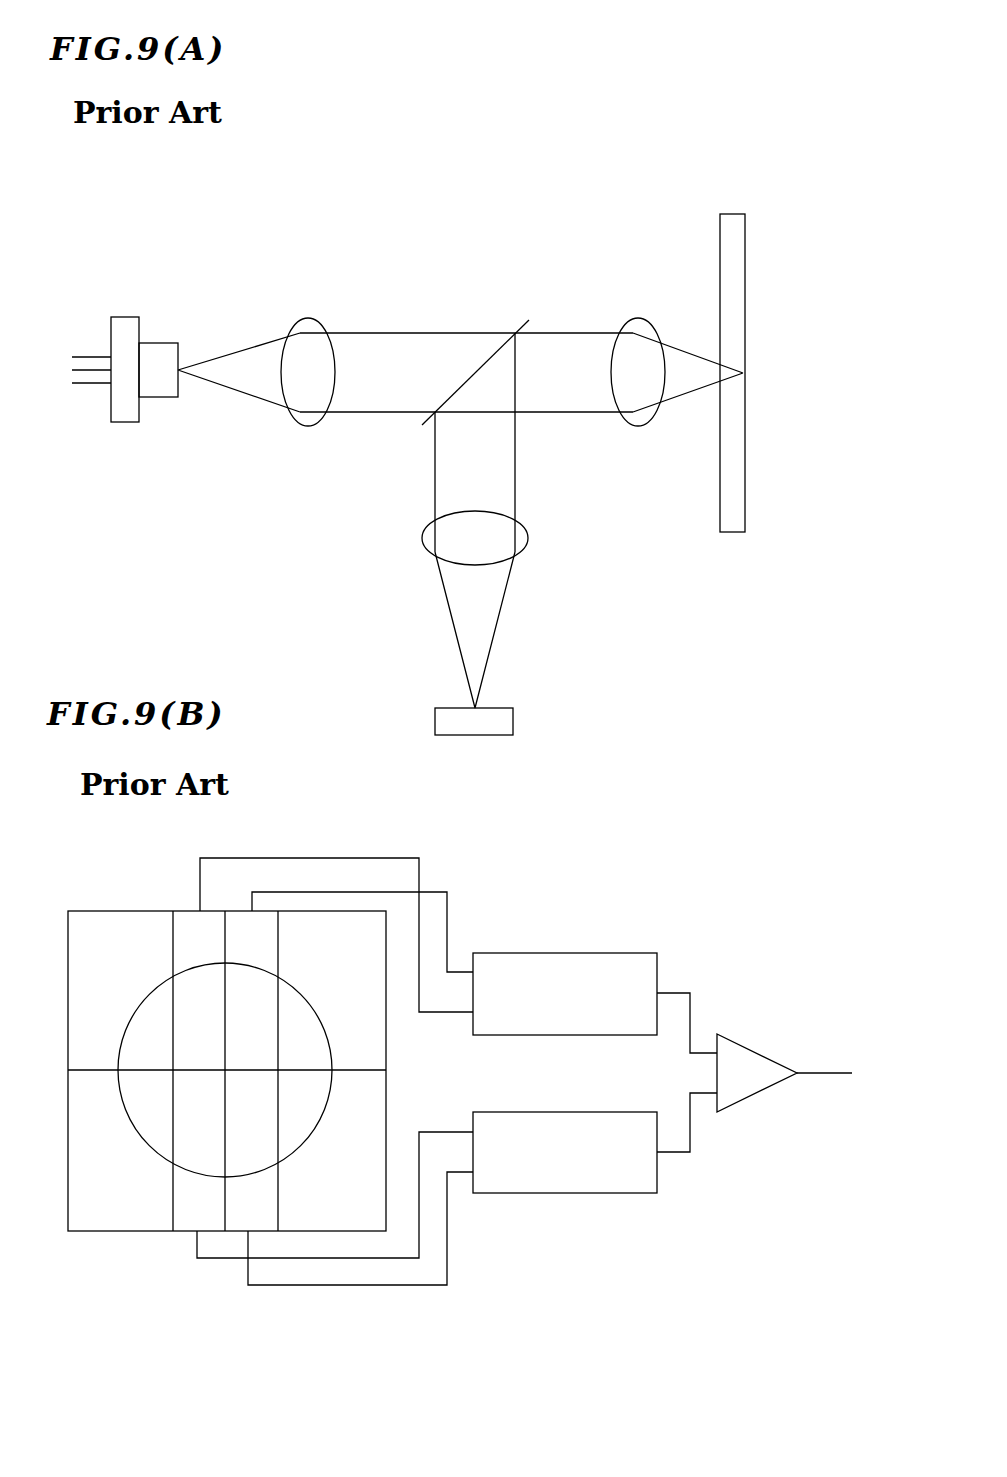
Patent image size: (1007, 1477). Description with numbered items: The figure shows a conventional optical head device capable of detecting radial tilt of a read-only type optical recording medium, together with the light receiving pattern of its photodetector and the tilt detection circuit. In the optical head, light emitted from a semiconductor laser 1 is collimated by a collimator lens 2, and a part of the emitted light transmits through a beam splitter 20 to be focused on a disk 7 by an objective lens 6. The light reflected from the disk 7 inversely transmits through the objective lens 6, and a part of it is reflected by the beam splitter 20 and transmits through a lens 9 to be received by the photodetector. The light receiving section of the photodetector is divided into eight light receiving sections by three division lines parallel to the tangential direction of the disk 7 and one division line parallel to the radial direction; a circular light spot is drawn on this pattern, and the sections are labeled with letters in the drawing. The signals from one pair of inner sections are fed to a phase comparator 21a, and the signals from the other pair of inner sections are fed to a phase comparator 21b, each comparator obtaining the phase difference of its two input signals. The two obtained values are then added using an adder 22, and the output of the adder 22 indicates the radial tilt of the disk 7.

The semiconductor laser 1 is at (123, 316).
The collimator lens 2 is at (307, 320).
The beam splitter 20 is at (525, 322).
The objective lens 6 is at (640, 327).
The disk 7 is at (733, 212).
The lens 9 is at (422, 542).
The phase comparator 21a is at (580, 953).
The phase comparator 21b is at (580, 1193).
The adder 22 is at (757, 1053).